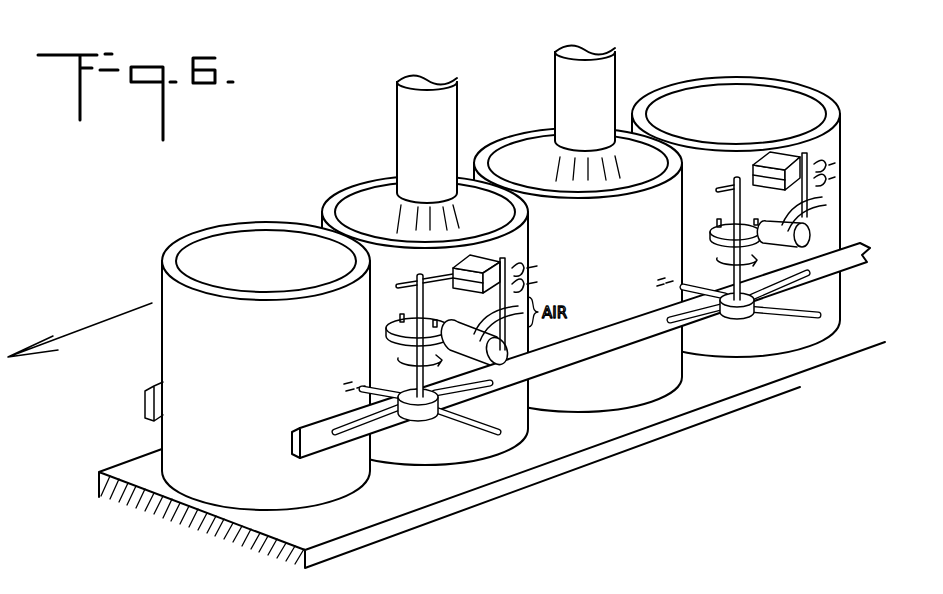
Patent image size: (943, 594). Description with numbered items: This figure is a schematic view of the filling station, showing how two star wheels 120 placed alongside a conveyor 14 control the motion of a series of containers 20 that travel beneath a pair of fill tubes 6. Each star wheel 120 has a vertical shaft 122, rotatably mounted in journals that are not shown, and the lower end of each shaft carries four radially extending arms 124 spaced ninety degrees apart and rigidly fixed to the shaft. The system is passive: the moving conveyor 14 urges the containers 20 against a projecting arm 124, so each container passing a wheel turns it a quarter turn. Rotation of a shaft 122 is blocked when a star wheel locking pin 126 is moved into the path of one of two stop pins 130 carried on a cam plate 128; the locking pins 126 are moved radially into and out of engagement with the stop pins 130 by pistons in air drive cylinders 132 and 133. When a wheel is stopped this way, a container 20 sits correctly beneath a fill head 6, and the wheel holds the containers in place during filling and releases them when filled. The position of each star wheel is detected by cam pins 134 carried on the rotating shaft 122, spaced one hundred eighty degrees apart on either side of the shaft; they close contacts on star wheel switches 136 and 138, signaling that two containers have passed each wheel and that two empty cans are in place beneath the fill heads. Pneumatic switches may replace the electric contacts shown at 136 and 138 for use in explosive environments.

The fill tube 6 is at (458, 112).
The conveyor 14 is at (125, 462).
The container 20 is at (320, 207).
The star wheel 120 is at (383, 367).
The vertical shaft 122 is at (417, 296).
The radially extending arm 124 is at (462, 422).
The star wheel locking pin 126 is at (453, 323).
The cam plate 128 is at (395, 355).
The stop pin 130 is at (392, 318).
The air drive cylinder 132 is at (500, 347).
The air drive cylinder 133 is at (820, 227).
The cam pin 134 is at (397, 283).
The star wheel switch 136 is at (500, 258).
The star wheel switch 138 is at (805, 153).